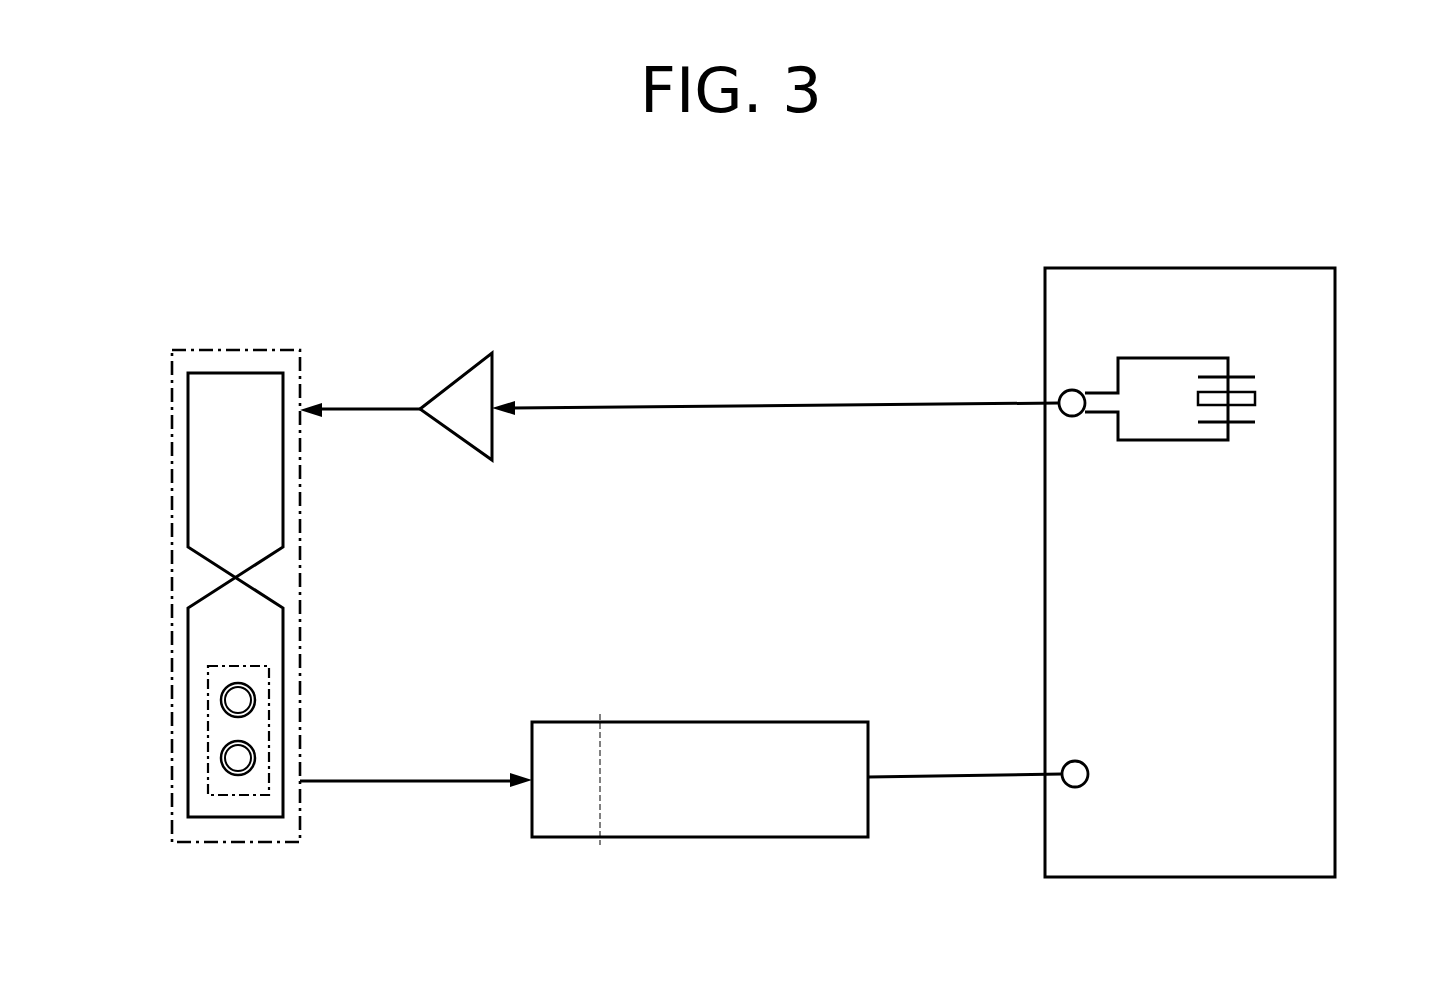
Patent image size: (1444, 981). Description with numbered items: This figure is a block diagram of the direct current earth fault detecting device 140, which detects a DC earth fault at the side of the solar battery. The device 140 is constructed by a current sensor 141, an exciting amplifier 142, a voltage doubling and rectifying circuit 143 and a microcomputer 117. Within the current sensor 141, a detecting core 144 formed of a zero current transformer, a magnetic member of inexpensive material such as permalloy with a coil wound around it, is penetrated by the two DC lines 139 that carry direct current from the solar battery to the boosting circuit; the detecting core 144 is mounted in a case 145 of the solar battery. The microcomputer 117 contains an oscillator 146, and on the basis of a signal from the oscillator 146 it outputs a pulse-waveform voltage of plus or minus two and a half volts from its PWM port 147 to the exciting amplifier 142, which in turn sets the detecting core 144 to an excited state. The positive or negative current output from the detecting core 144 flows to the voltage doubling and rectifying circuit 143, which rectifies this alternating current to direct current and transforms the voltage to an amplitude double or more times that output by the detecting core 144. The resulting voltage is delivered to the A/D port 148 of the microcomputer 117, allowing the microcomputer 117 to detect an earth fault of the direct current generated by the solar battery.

The microcomputer 117 is at (1335, 460).
The DC lines 139 is at (220, 702).
The direct current earth fault detecting device 140 is at (618, 312).
The current sensor 141 is at (209, 342).
The exciting amplifier 142 is at (463, 373).
The voltage doubling and rectifying circuit 143 is at (703, 722).
The detecting core 144 is at (270, 600).
The case 145 is at (172, 476).
The oscillator 146 is at (1196, 358).
The PWM port 147 is at (1061, 394).
The A/D port 148 is at (1065, 786).